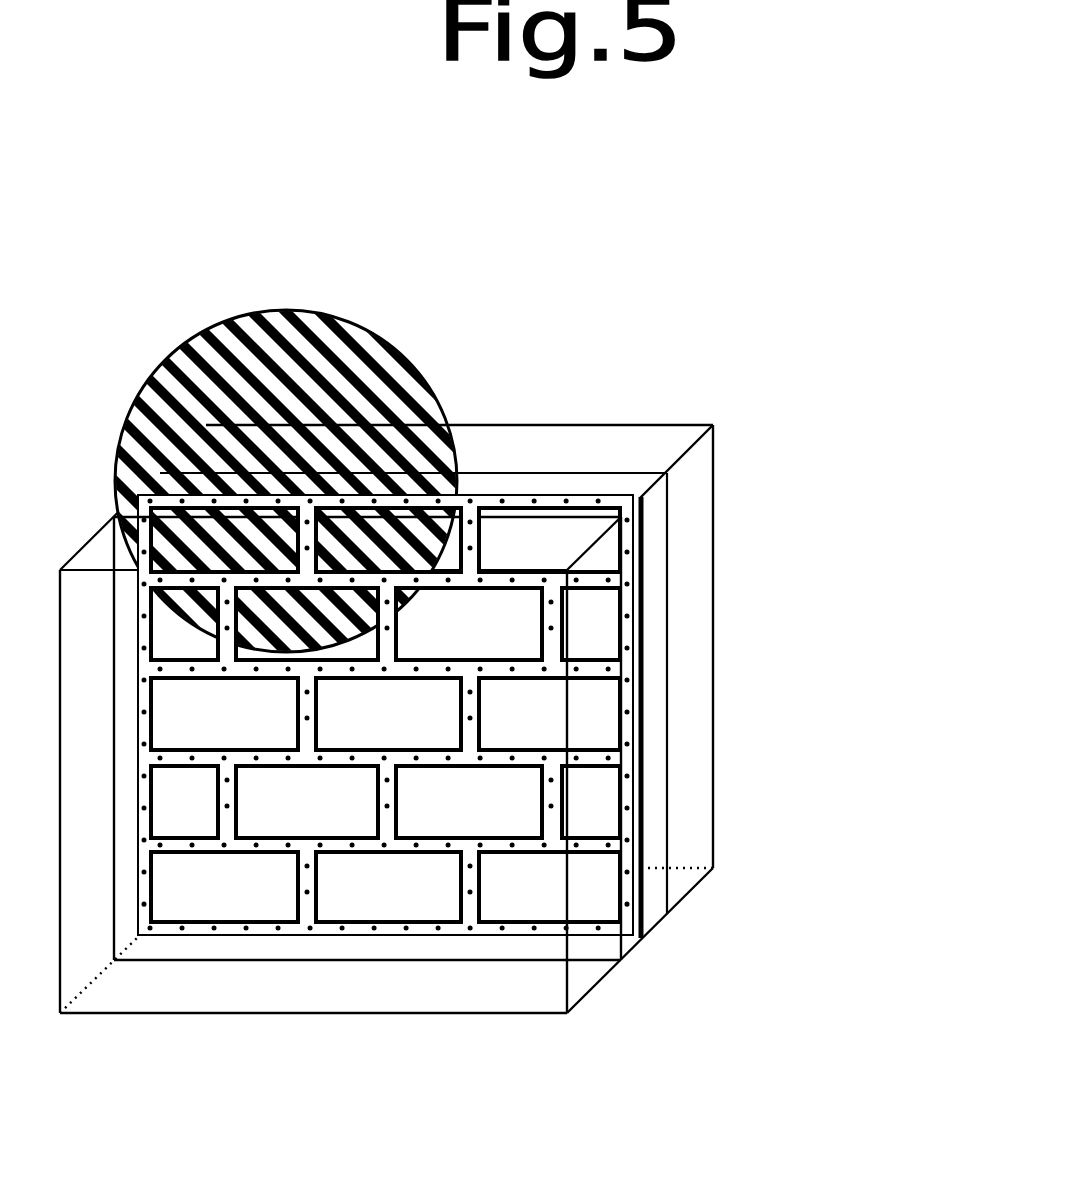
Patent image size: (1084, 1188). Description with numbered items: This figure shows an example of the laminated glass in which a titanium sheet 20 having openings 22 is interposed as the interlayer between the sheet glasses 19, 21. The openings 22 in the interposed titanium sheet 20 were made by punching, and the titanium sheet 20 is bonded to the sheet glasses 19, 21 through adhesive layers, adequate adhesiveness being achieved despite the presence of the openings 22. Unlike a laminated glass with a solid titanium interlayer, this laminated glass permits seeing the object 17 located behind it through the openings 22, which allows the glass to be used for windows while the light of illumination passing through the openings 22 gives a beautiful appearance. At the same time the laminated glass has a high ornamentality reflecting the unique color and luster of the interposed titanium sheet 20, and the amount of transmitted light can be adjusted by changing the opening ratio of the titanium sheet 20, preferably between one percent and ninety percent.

The circular hatched element 17 is at (464, 350).
The rear frame 19 is at (694, 523).
The partition grid 20 is at (682, 636).
The front plate 21 is at (672, 796).
The openings 22 is at (622, 895).